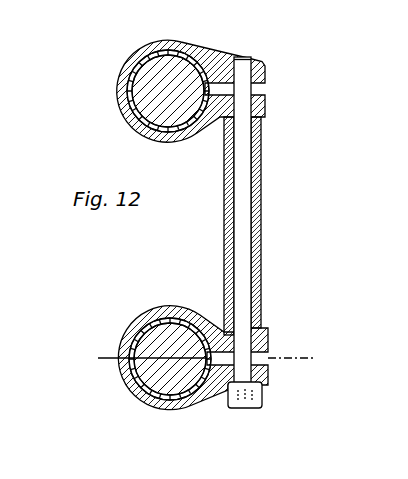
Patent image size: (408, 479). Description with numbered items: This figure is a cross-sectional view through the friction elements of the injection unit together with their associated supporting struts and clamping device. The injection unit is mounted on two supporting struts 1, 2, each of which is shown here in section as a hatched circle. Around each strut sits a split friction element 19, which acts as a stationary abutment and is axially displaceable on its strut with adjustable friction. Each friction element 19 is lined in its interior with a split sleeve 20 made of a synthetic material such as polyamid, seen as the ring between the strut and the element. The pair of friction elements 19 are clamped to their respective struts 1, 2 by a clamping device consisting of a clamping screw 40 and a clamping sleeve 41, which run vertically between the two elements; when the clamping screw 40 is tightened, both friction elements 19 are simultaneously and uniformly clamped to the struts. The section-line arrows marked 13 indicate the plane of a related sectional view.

The supporting strut 1 is at (178, 80).
The supporting strut 2 is at (162, 345).
The section line 13 is at (98, 332).
The split friction element 19 is at (221, 63).
The split sleeve 20 is at (150, 124).
The clamping screw 40 is at (256, 160).
The clamping sleeve 41 is at (262, 197).